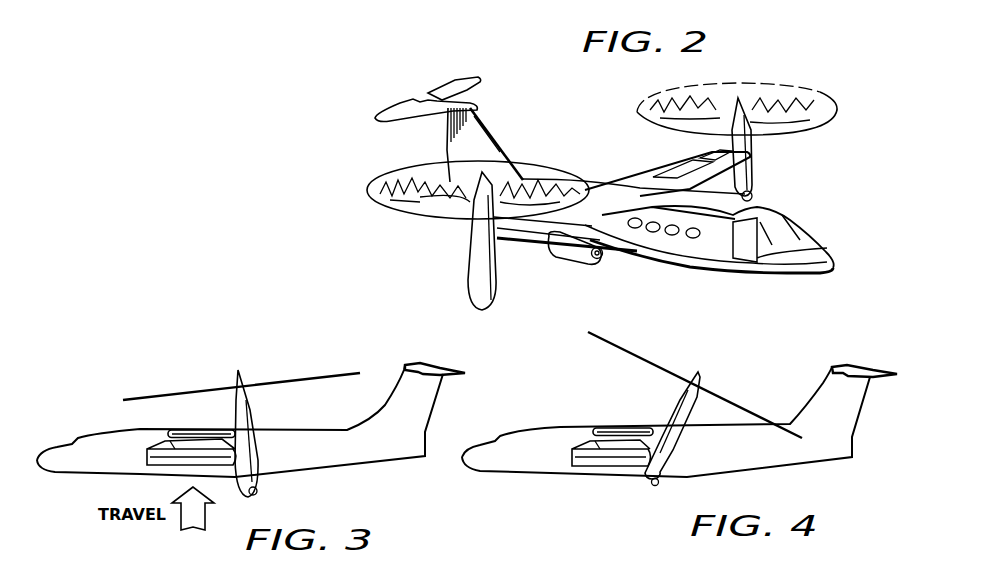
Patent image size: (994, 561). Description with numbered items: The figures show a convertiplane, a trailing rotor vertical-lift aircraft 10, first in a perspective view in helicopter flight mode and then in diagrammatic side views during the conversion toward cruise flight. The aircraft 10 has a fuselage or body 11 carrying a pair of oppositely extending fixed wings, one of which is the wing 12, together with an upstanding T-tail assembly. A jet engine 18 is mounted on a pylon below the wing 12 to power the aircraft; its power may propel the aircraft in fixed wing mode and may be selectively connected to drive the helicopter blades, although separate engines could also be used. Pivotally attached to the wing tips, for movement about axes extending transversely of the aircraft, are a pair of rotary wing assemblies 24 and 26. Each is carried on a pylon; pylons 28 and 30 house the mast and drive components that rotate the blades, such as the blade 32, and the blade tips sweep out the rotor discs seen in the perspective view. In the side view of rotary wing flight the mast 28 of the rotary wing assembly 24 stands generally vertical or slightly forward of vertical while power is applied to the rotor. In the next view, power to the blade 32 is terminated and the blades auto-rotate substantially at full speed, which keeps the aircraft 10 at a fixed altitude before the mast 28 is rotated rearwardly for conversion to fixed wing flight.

In FIG. 3, the trailing rotor vertical-lift aircraft 10 is at (251, 424).
In FIG. 4, the trailing rotor vertical-lift aircraft 10 is at (679, 420).
In FIG. 3, the fuselage 11 is at (76, 474).
In FIG. 4, the fuselage 11 is at (519, 472).
In FIG. 3, the fixed wing 12 is at (185, 430).
In FIG. 4, the fixed wing 12 is at (622, 428).
In FIG. 3, the jet engine 18 is at (160, 466).
In FIG. 4, the jet engine 18 is at (593, 468).
In FIG. 2, the rotary wing assembly 24 is at (762, 138).
In FIG. 3, the rotary wing assembly 24 is at (236, 366).
In FIG. 4, the rotary wing assembly 24 is at (722, 368).
In FIG. 2, the rotary wing assembly 26 is at (456, 224).
In FIG. 2, the pylon 28 is at (753, 190).
In FIG. 3, the pylon 28 is at (260, 483).
In FIG. 4, the pylon 28 is at (661, 481).
In FIG. 2, the pylon 30 is at (470, 290).
In FIG. 3, the blade 32 is at (331, 350).
In FIG. 4, the blade 32 is at (757, 412).